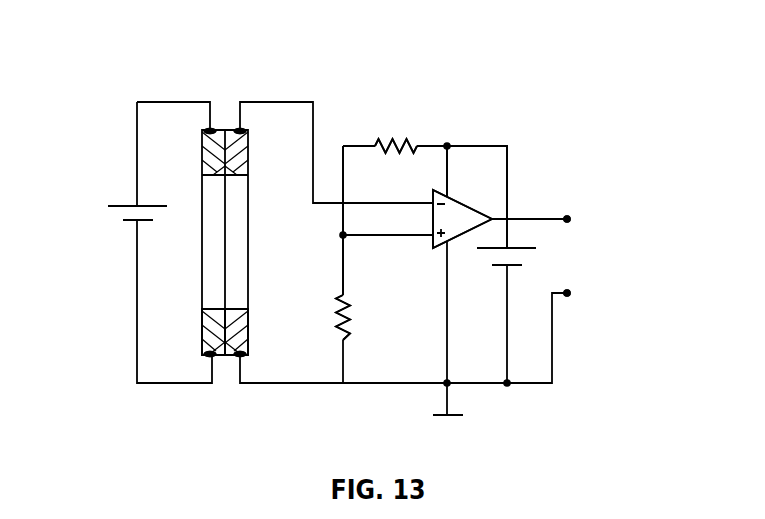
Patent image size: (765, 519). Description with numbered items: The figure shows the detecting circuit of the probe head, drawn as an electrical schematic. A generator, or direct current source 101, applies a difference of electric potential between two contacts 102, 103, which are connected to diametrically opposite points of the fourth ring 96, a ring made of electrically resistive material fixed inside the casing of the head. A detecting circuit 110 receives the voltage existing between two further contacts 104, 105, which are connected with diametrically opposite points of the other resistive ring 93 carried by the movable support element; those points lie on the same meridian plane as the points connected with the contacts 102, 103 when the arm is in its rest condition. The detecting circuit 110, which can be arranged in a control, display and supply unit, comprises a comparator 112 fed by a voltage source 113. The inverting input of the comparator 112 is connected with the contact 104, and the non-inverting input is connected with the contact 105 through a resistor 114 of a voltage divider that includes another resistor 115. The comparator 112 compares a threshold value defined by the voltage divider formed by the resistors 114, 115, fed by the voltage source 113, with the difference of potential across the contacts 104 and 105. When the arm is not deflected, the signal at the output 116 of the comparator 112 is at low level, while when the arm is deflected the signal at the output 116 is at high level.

The ring 93 is at (242, 328).
The fourth ring 96 is at (208, 330).
The direct current source 101 is at (120, 204).
The contact 102 is at (210, 130).
The contact 103 is at (210, 358).
The contact 104 is at (240, 130).
The contact 105 is at (243, 357).
The detecting circuit 110 is at (436, 128).
The comparator 112 is at (465, 218).
The voltage source 113 is at (498, 267).
The resistor 114 is at (336, 298).
The resistor 115 is at (386, 132).
The output 116 is at (572, 257).